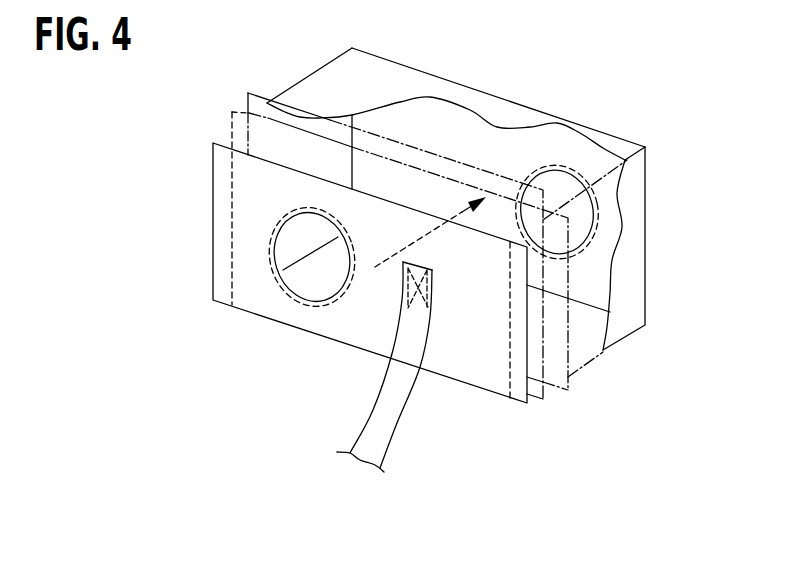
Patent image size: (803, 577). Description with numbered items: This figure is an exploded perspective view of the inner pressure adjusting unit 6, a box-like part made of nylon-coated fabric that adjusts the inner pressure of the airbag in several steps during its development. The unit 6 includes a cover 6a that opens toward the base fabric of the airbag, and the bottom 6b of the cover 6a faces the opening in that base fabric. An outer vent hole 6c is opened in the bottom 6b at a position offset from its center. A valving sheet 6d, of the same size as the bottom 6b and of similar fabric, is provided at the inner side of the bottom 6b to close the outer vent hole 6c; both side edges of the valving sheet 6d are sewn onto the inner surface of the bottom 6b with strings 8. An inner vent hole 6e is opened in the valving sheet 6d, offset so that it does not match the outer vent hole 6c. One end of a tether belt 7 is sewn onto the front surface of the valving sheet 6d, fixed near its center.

The inner pressure adjusting unit 6 is at (482, 220).
The cover 6a is at (632, 285).
The bottom 6b is at (470, 127).
The outer vent hole 6c is at (558, 182).
The valving sheet 6d is at (370, 273).
The inner vent hole 6e is at (303, 278).
The tether belt 7 is at (363, 433).
The strings 8 is at (232, 250).